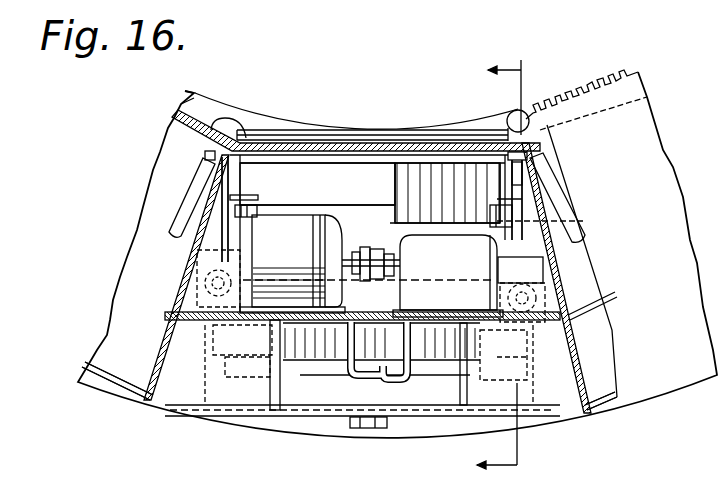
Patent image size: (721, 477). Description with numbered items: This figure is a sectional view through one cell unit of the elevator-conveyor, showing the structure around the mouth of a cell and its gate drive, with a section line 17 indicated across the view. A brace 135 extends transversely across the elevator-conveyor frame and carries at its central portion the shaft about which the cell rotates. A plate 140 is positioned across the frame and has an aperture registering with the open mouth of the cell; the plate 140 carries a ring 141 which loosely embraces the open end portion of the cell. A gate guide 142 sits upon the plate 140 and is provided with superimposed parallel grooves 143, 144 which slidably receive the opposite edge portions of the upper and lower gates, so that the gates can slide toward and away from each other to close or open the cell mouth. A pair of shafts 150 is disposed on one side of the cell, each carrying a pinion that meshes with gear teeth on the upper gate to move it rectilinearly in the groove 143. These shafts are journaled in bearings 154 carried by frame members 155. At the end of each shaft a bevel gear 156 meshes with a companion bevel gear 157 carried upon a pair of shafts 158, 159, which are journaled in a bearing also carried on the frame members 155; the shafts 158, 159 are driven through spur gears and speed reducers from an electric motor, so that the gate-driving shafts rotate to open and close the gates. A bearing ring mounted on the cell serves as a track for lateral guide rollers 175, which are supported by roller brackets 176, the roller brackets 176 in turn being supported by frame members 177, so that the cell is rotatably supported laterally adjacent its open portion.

The section line 17- 17 is at (486, 258).
The brace 135 is at (383, 430).
The plate 140 is at (340, 152).
The ring 141 is at (366, 152).
The gate guide 142 is at (517, 127).
The groove 143 is at (233, 128).
The groove 144 is at (231, 126).
The shaft 150 is at (224, 174).
The bearing 154 is at (192, 248).
The frame member 155 is at (243, 270).
The bevel gear 156 is at (200, 277).
The bevel gear 157 is at (178, 310).
The shaft 158 is at (550, 285).
The shaft 159 is at (213, 320).
The lateral guide roller 175 is at (257, 205).
The roller bracket 176 is at (247, 198).
The frame member 177 is at (562, 216).